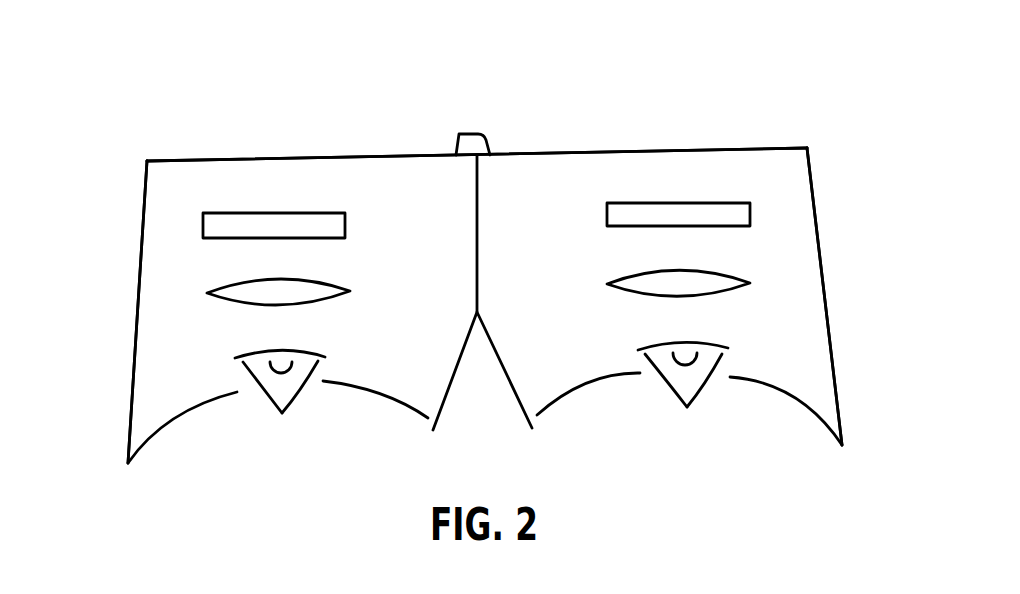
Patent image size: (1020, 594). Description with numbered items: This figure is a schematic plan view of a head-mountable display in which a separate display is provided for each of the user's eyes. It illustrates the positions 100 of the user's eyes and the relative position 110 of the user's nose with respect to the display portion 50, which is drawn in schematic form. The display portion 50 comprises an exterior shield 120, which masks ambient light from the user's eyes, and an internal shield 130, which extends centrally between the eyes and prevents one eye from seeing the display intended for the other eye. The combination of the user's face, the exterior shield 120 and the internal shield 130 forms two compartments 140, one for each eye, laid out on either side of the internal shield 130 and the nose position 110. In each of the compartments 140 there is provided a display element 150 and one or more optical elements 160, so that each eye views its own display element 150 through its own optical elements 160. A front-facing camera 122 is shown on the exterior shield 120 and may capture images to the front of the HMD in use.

The display portion 50 is at (791, 146).
The positions of the user's eyes 100 is at (290, 400).
The relative position of the user's nose 110 is at (508, 367).
The exterior shield 120 is at (560, 149).
The front-facing camera 122 is at (478, 132).
The internal shield 130 is at (480, 231).
The compartments 140 is at (327, 182).
The display element 150 is at (227, 227).
The optical elements 160 is at (208, 293).